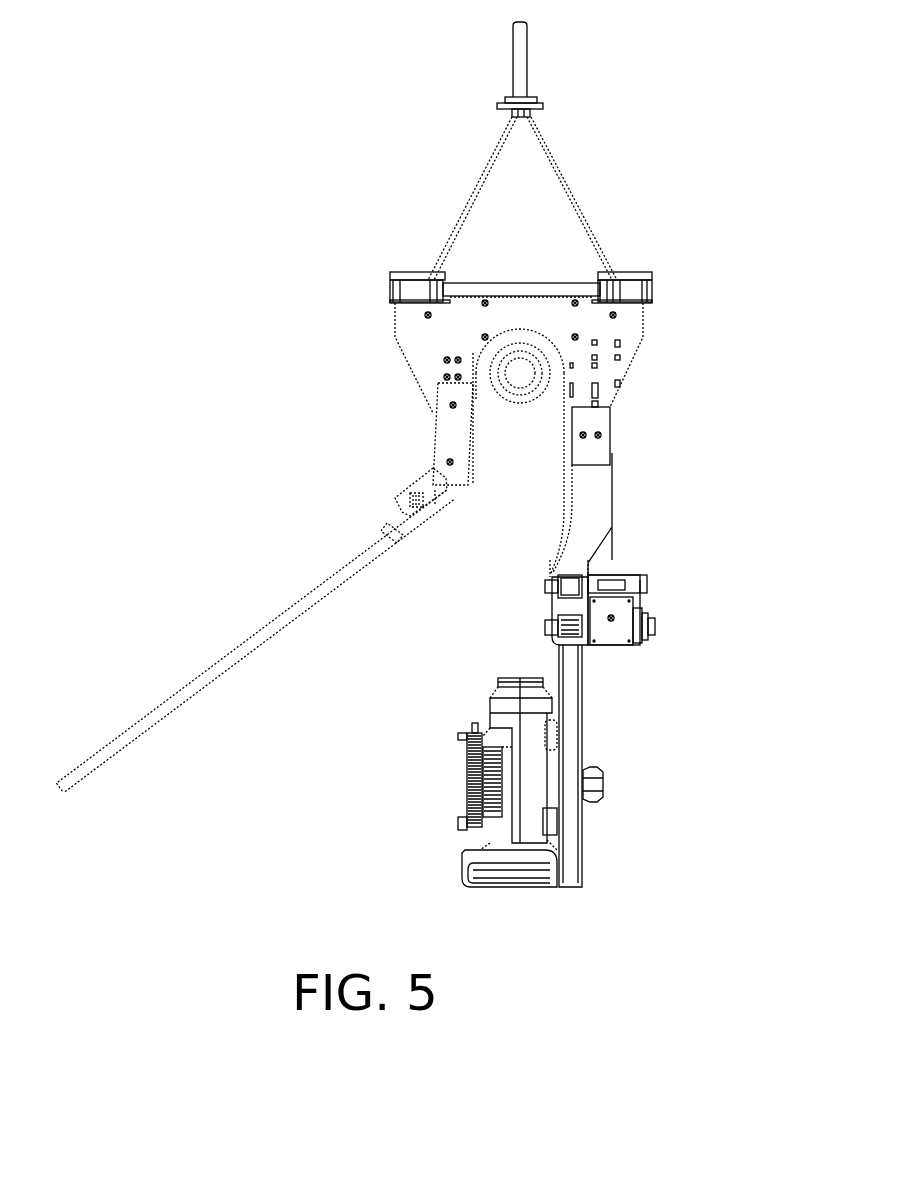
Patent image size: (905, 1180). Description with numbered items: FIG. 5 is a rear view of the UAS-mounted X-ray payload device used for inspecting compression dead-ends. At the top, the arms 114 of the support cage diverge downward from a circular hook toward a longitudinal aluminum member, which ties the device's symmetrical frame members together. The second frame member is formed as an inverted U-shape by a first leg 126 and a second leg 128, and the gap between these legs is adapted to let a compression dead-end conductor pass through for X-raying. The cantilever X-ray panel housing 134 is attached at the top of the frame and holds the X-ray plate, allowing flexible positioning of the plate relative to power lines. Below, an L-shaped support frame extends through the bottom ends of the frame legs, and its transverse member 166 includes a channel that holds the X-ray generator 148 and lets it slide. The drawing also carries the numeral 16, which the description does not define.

The suspension rod 16 is at (565, 203).
The arms 114 is at (492, 177).
The first leg 126 is at (428, 370).
The second leg 128 is at (620, 380).
The cantilever X-ray panel housing 134 is at (520, 380).
The X-ray generator 148 is at (490, 763).
The transverse member 166 is at (564, 823).